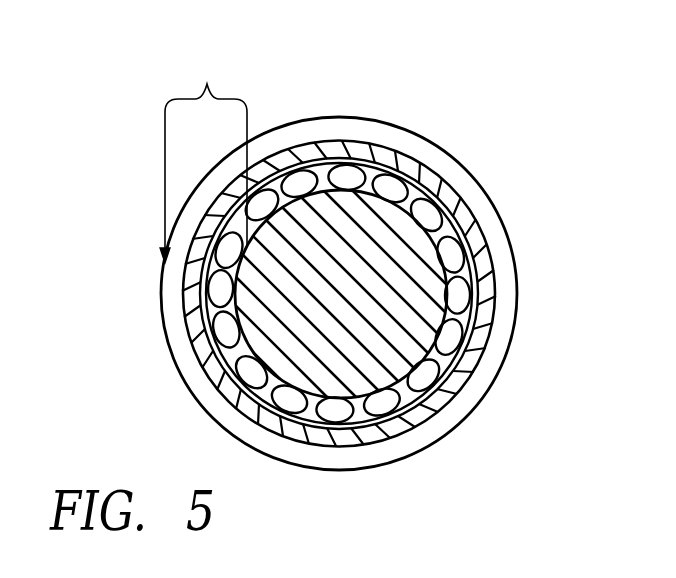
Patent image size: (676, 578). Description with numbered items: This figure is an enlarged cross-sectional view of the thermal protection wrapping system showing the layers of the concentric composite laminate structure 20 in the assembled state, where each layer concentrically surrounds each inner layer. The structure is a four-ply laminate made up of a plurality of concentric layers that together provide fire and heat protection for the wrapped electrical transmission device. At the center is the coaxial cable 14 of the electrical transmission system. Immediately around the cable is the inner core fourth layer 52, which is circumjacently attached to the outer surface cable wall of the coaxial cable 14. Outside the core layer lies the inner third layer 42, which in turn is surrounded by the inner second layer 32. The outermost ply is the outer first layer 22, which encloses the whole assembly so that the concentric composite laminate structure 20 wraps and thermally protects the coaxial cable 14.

The concentric composite laminate structure 20 is at (203, 153).
The outer first layer 22 is at (496, 364).
The inner second layer 32 is at (498, 311).
The inner third layer 42 is at (480, 266).
The inner core fourth layer 52 is at (430, 207).
The coaxial cable 14 is at (378, 277).